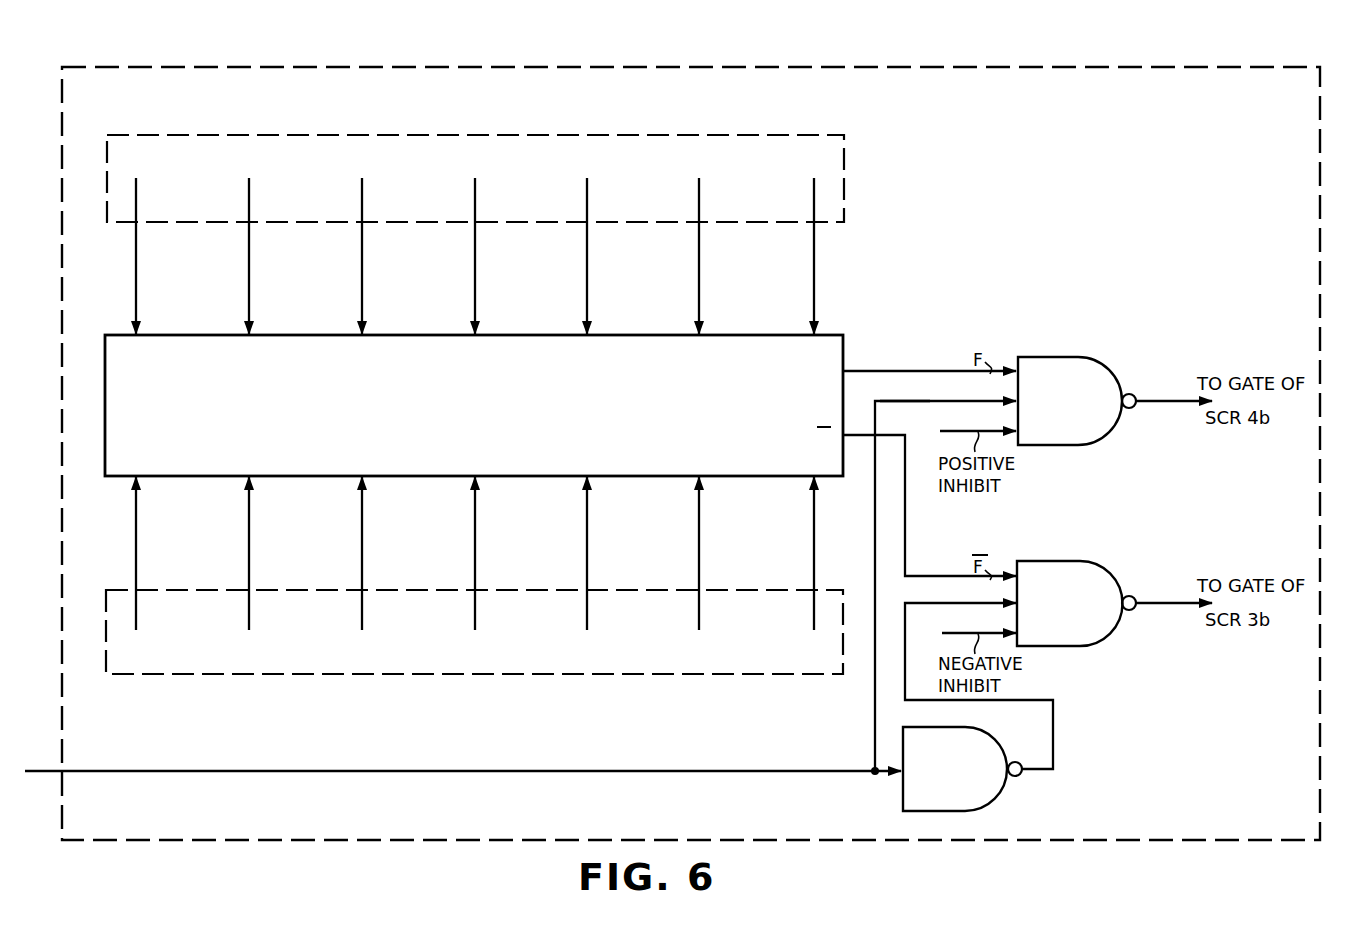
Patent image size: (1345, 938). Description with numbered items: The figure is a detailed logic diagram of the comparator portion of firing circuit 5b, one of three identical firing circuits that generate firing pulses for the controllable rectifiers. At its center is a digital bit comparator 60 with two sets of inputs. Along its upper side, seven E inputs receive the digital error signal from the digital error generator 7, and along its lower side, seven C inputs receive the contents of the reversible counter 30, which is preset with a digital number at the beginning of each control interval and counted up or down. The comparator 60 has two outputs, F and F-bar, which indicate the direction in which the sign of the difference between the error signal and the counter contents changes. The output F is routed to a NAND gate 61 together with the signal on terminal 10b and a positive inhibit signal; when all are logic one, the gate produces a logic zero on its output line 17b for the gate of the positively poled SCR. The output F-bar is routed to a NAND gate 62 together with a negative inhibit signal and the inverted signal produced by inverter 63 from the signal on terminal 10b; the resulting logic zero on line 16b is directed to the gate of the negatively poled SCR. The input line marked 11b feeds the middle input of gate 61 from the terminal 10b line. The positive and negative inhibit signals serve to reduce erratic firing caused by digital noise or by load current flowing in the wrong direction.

The firing circuit 5b is at (573, 64).
The digital error generator 7 is at (107, 137).
The digital bit comparator 60 is at (105, 395).
The reversible counter 30 is at (106, 620).
The NAND gate 61 is at (1100, 364).
The NAND gate 62 is at (1106, 574).
The inverter 63 is at (1000, 793).
The terminal 10b is at (36, 774).
The inverted control input line 11b is at (990, 402).
The output line to gate of SCR 4b 17b is at (1158, 400).
The output line to gate of SCR 3b 16b is at (1165, 602).